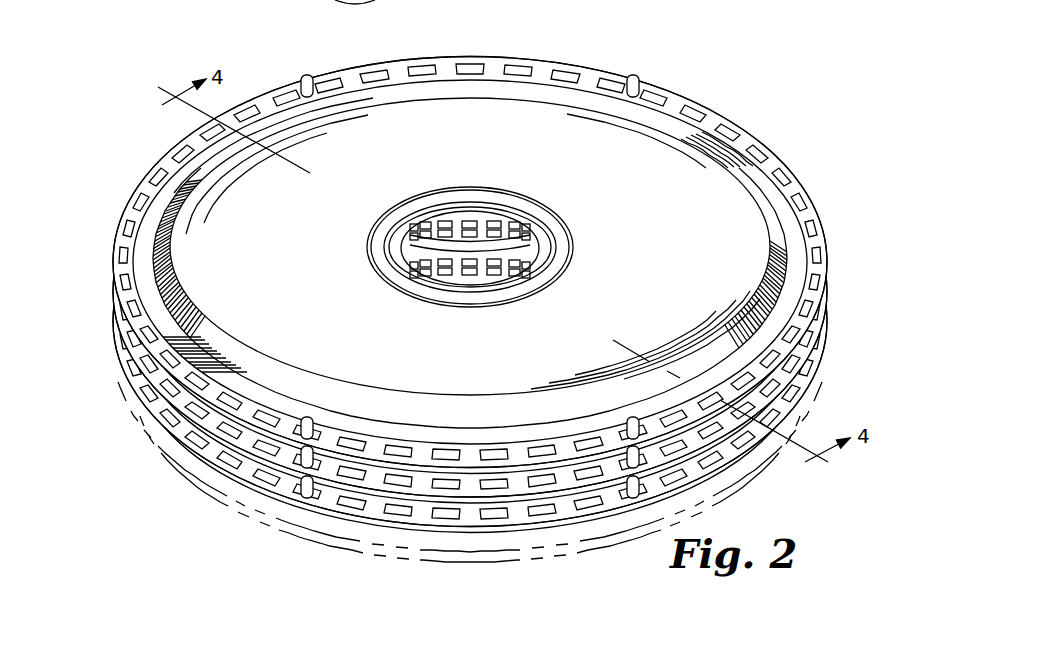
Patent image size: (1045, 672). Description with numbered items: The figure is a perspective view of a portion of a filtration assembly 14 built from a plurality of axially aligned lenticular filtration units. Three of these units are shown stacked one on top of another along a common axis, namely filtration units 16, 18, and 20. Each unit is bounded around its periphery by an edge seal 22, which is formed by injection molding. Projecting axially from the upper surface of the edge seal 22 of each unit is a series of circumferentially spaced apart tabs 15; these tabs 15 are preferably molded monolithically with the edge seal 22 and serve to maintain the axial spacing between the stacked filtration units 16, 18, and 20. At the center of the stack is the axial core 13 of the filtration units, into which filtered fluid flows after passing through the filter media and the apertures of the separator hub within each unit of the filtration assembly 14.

The axial core 13 is at (466, 186).
The filtration assembly 14 is at (752, 106).
The tabs 15 is at (640, 76).
The filtration unit 16 is at (260, 478).
The filtration unit 18 is at (198, 420).
The filtration unit 20 is at (213, 254).
The edge seal 22 is at (163, 178).